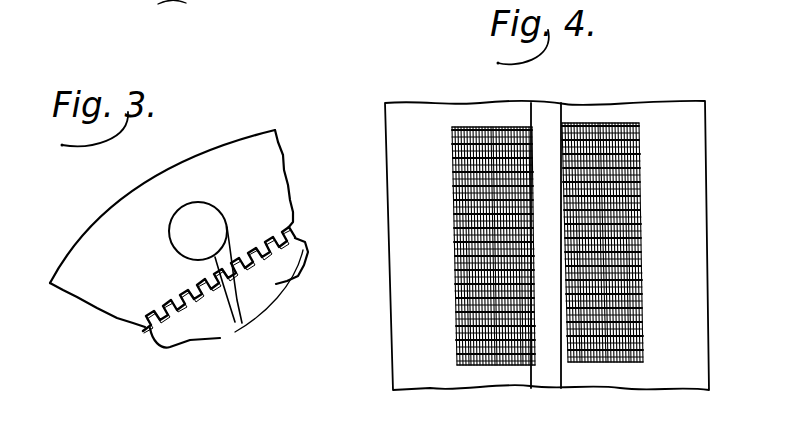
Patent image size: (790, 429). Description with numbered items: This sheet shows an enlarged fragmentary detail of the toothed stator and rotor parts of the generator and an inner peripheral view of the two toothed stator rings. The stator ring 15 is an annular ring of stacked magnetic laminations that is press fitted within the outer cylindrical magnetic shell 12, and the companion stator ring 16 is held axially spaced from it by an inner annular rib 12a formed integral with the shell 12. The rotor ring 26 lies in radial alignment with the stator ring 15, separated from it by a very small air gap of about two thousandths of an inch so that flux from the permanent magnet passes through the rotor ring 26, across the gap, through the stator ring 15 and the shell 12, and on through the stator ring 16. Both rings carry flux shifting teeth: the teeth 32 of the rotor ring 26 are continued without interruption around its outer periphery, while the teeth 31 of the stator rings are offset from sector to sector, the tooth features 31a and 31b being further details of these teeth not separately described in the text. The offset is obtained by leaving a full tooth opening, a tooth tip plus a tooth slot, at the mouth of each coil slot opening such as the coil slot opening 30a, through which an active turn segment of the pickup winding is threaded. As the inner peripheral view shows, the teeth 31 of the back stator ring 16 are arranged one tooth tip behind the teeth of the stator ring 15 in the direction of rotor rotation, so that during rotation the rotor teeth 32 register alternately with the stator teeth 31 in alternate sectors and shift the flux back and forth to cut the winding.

In FIG. 4, the outer cylindrical magnetic shell 12 is at (448, 107).
In FIG. 4, the inner annular rib 12a is at (546, 110).
In FIG. 3, the stator ring 15 is at (85, 242).
In FIG. 4, the stator ring 15 is at (455, 245).
In FIG. 4, the stator ring 16 is at (642, 226).
In FIG. 3, the rotor ring 26 is at (267, 281).
In FIG. 3, the coil slot opening 30a is at (192, 204).
In FIG. 3, the flux shifting teeth 31 is at (203, 268).
In FIG. 4, the flux shifting teeth 31 is at (452, 155).
In FIG. 3, the tooth recesses 31a is at (147, 314).
In FIG. 4, the tooth recesses 31a is at (455, 298).
In FIG. 3, the slot of keyhole 31b is at (224, 228).
In FIG. 3, the flux shifting teeth 32 is at (217, 273).